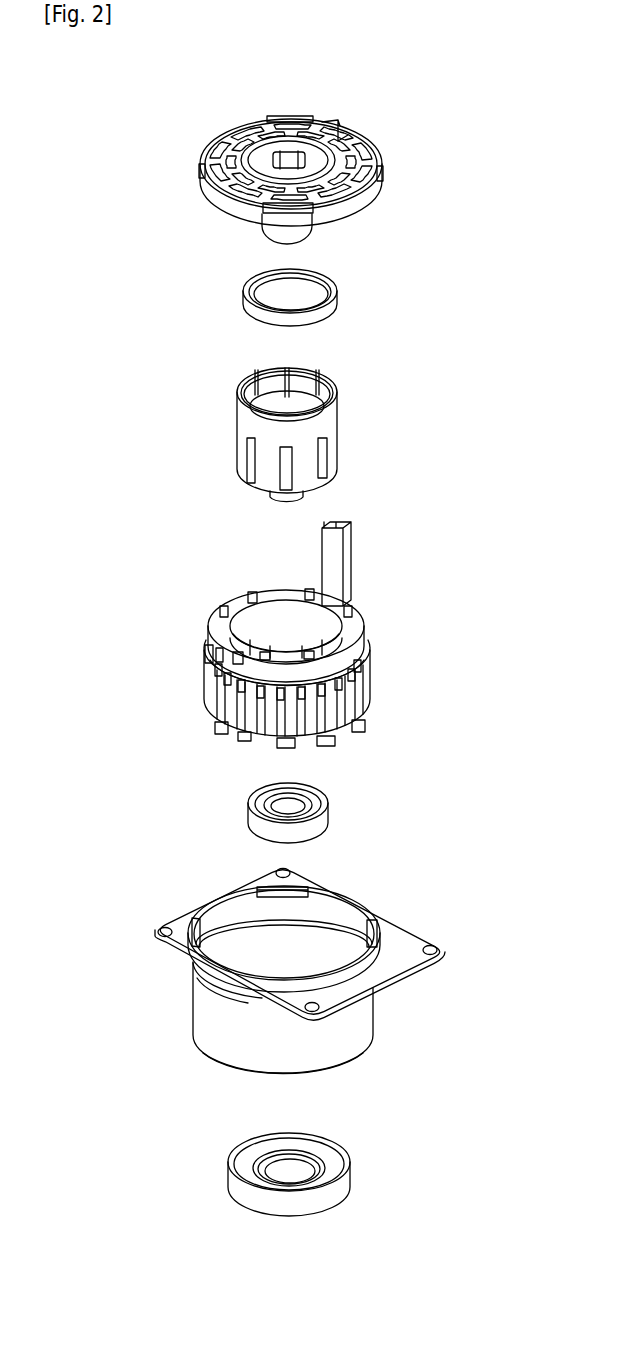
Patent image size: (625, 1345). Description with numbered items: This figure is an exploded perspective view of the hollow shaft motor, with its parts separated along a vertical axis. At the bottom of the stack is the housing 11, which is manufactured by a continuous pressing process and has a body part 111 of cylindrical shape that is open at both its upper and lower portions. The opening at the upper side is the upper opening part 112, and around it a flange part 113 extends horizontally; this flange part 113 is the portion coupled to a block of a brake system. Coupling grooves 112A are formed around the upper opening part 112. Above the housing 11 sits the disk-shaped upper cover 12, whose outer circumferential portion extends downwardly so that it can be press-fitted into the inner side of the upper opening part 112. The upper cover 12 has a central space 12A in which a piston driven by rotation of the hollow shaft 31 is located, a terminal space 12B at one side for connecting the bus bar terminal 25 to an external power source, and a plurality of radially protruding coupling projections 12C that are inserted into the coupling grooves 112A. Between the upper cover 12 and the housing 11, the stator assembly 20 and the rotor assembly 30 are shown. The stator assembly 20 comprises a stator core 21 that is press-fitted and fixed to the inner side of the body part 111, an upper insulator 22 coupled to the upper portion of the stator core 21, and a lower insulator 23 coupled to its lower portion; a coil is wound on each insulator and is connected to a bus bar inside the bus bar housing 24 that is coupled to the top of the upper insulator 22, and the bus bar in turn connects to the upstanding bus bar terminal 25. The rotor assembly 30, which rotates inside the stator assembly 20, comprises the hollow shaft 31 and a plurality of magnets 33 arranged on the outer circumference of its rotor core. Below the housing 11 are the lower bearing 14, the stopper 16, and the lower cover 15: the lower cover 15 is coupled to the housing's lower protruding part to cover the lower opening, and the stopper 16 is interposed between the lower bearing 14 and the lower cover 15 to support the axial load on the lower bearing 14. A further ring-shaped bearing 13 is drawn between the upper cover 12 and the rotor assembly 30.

The housing 11 is at (265, 955).
The body part 111 is at (363, 1020).
The upper opening part 112 is at (273, 914).
The coupling grooves 112A is at (191, 927).
The flange part 113 is at (413, 935).
The upper cover 12 is at (275, 157).
The central space 12A is at (287, 158).
The terminal space 12B is at (347, 138).
The coupling projections 12C is at (200, 160).
The upper bearing 13 is at (338, 283).
The lower bearing 14 is at (323, 820).
The lower cover 15 is at (317, 1155).
The stopper 16 is at (313, 1153).
The stator assembly 20 is at (272, 642).
The stator core 21 is at (368, 673).
The upper insulator 22 is at (207, 657).
The lower insulator 23 is at (323, 743).
The bus bar housing 24 is at (265, 597).
The bus bar terminal 25 is at (348, 563).
The rotor assembly 30 is at (273, 430).
The hollow shaft 31 is at (333, 378).
The magnets 33 is at (322, 453).